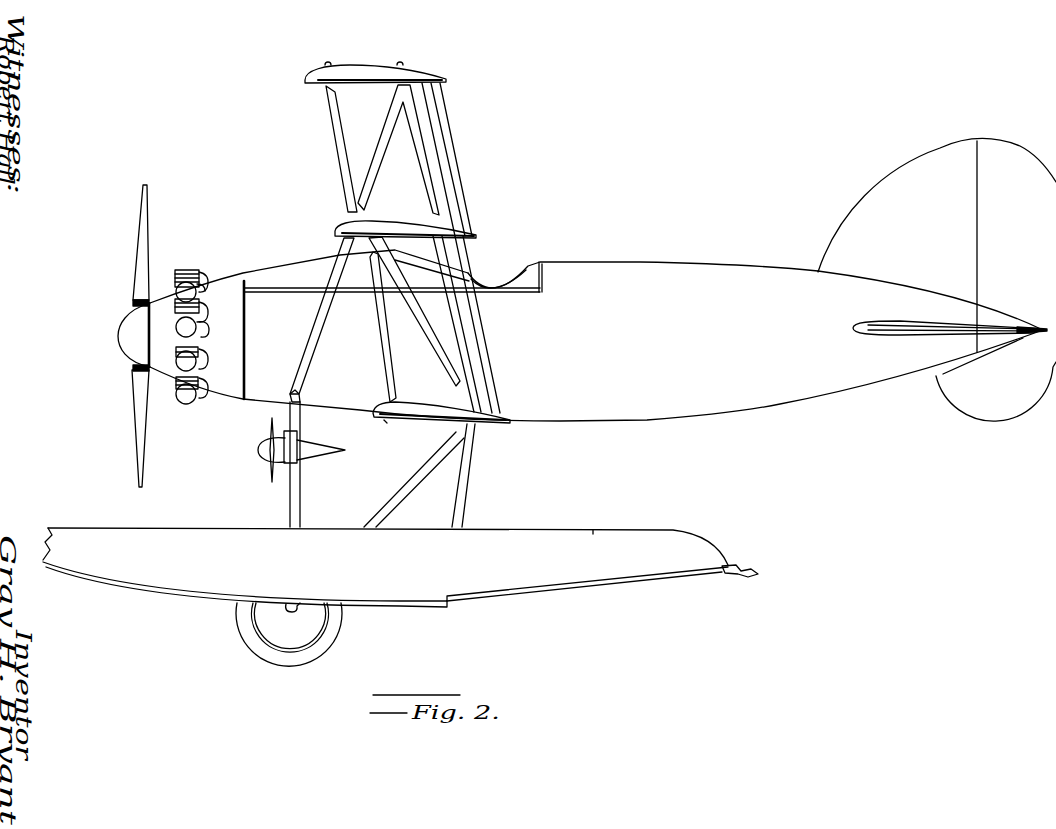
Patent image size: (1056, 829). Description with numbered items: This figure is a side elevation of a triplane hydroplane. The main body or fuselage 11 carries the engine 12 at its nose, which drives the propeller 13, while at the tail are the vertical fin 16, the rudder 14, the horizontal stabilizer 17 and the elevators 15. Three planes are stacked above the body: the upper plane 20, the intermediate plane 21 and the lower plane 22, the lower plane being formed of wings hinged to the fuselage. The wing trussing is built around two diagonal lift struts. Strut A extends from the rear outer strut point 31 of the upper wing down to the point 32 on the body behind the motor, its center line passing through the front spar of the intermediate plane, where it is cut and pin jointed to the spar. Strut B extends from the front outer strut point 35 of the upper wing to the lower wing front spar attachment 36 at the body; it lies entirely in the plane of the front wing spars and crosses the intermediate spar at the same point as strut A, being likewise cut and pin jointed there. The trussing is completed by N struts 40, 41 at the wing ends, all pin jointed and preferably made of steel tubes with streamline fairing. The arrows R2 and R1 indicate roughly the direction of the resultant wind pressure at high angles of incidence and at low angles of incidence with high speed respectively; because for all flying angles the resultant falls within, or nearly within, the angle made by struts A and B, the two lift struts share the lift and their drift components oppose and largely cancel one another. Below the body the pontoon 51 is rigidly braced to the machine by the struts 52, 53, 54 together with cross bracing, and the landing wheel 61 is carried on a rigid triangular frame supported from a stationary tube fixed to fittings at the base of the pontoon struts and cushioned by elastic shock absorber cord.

The main body or fuselage 11 is at (640, 262).
The engine 12 is at (183, 270).
The propeller 13 is at (142, 232).
The rudder 14 is at (1000, 139).
The elevators 15 is at (1023, 335).
The vertical fin 16 is at (895, 178).
The horizontal stabilizer 17 is at (913, 325).
The upper plane 20 is at (446, 82).
The intermediate plane 21 is at (477, 234).
The lower plane 22 is at (515, 417).
The rear outer strut point 31 is at (398, 82).
The point on the body back of the motor 32 is at (292, 398).
The front outer strut point 35 is at (324, 88).
The lower wing front spar attachment 36 is at (385, 421).
The N strut 40 is at (425, 167).
The N strut 41 is at (457, 337).
The pontoon 51 is at (400, 567).
The strut 52 is at (301, 487).
The strut 53 is at (402, 498).
The strut 54 is at (462, 500).
The landing wheel 61 is at (327, 640).
The diagonal strut A is at (370, 180).
The diagonal strut B is at (338, 135).
The resultant pressure at low angles of incidence R1 is at (377, 75).
The resultant wind pressure at high angles of incidence R2 is at (353, 77).